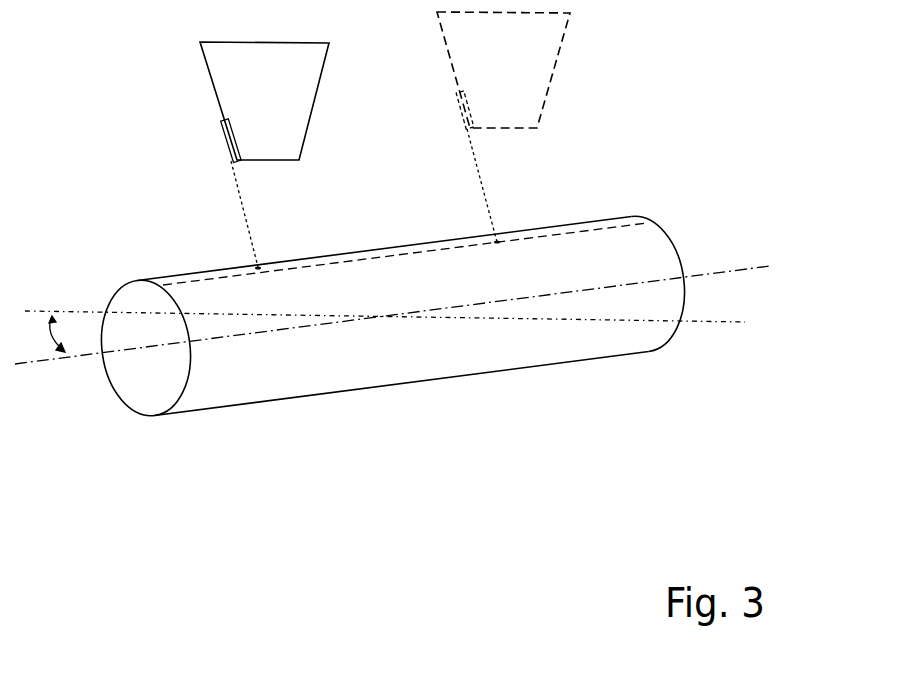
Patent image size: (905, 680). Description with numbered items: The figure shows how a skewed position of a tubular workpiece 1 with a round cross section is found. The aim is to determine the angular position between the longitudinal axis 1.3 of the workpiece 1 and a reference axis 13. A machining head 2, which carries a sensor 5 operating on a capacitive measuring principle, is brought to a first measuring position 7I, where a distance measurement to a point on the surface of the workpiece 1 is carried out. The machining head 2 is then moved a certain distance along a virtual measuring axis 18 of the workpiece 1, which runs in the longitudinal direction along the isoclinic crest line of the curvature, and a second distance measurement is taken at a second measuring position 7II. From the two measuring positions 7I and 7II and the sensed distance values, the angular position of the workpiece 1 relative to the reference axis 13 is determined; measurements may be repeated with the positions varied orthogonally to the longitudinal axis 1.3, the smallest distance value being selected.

The workpiece 1 is at (362, 373).
The longitudinal axis 1.3 is at (735, 266).
The reference axis 13 is at (722, 322).
The virtual measuring axis 18 is at (397, 258).
The machining head 2 is at (230, 66).
The sensor 5 is at (225, 140).
The first measuring position 7I is at (219, 159).
The second measuring position 7II is at (458, 128).